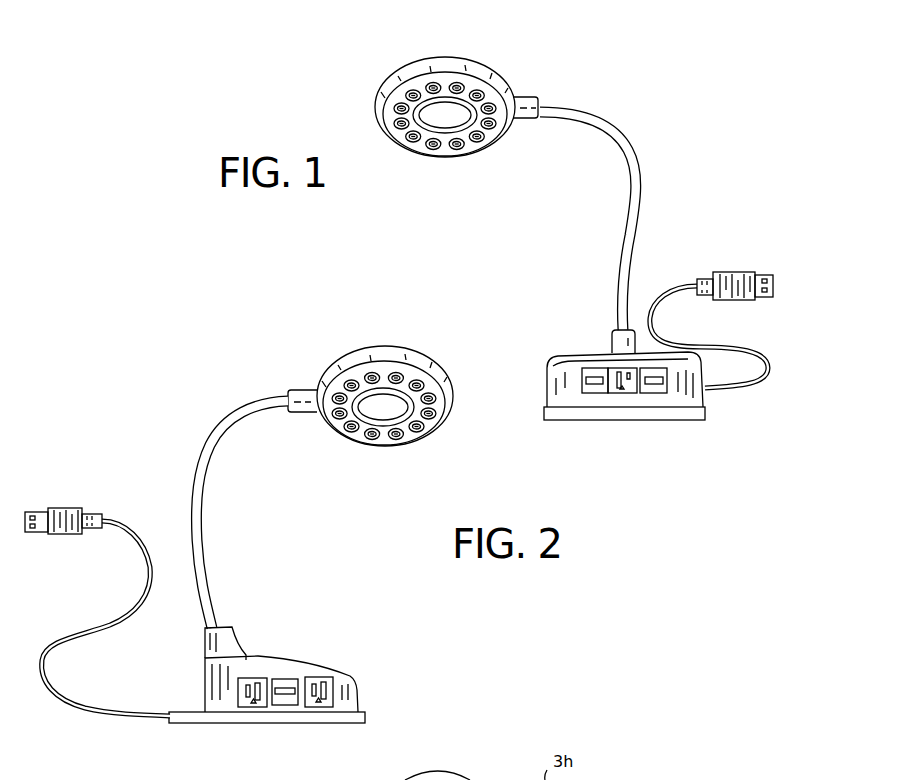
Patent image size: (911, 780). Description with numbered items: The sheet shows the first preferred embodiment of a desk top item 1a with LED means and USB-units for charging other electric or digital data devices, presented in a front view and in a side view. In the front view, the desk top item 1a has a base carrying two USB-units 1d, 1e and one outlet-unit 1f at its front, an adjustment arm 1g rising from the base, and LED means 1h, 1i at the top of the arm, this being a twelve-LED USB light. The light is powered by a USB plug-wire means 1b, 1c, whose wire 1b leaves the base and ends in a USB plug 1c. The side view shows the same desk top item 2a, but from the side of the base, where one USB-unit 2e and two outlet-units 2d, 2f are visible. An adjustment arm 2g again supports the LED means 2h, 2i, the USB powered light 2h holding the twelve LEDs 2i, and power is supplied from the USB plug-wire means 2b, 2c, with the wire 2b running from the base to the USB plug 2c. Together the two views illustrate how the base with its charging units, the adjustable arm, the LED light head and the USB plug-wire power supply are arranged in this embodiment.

In FIG. 1, the desk top item 1a is at (565, 359).
In FIG. 1, the USB plug-wire means 1b is at (757, 383).
In FIG. 1, the USB plug-wire means 1c is at (735, 283).
In FIG. 1, the USB-unit 1d is at (657, 393).
In FIG. 1, the USB-unit 1e is at (587, 390).
In FIG. 1, the outlet-unit 1f is at (620, 370).
In FIG. 1, the adjustment arm 1g is at (576, 108).
In FIG. 1, the LED means 1h is at (452, 62).
In FIG. 1, the LED means 1i is at (457, 149).
In FIG. 2, the desk top item 2a is at (210, 723).
In FIG. 2, the USB plug-wire means 2b is at (125, 697).
In FIG. 2, the USB plug-wire means 2c is at (65, 512).
In FIG. 2, the outlet-unit 2d is at (262, 708).
In FIG. 2, the USB-unit 2e is at (287, 705).
In FIG. 2, the outlet-unit 2f is at (328, 700).
In FIG. 2, the adjustment arm 2g is at (200, 505).
In FIG. 2, the USB powered light 2h is at (352, 357).
In FIG. 2, the LED means 2i is at (418, 430).